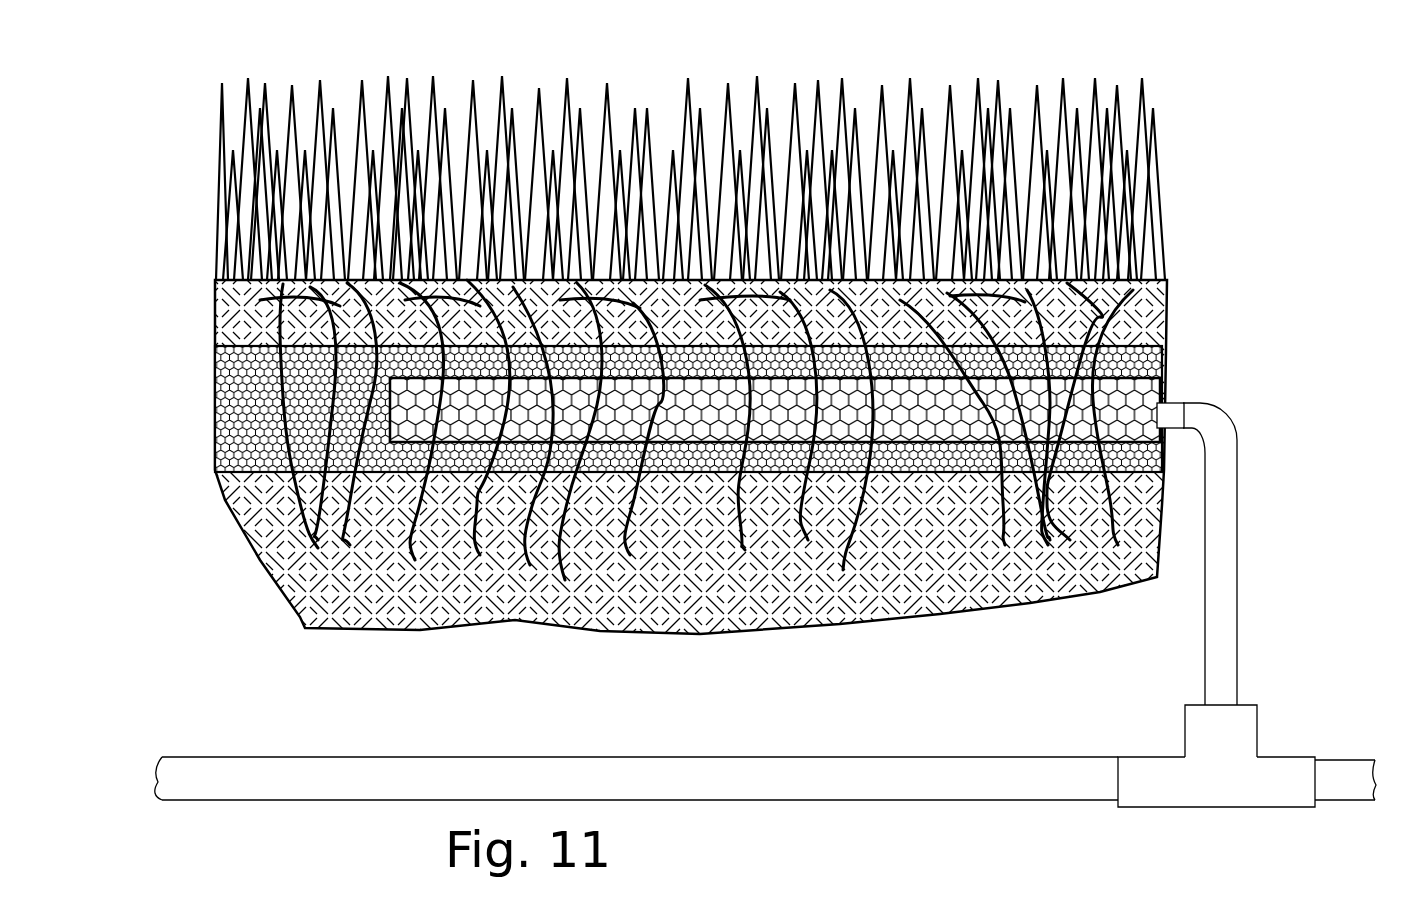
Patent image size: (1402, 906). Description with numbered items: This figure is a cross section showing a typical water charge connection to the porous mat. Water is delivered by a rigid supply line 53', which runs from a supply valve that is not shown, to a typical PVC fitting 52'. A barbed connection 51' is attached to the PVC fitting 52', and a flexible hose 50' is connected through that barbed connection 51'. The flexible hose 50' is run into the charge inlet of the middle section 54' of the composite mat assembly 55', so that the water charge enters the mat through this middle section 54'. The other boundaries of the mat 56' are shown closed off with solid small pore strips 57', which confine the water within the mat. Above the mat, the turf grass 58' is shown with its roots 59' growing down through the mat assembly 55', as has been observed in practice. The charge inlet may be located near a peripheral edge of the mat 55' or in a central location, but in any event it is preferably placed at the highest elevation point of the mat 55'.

The flexible hose 50' is at (1240, 554).
The barbed connection 51' is at (1253, 716).
The PVC fitting 52' is at (1215, 807).
The rigid supply line 53' is at (765, 798).
The middle section 54' is at (826, 377).
The composite mat assembly 55' is at (710, 400).
The mat 56' is at (691, 481).
The solid small pore strips 57' is at (660, 417).
The turf grass 58' is at (690, 163).
The roots 59' is at (696, 472).